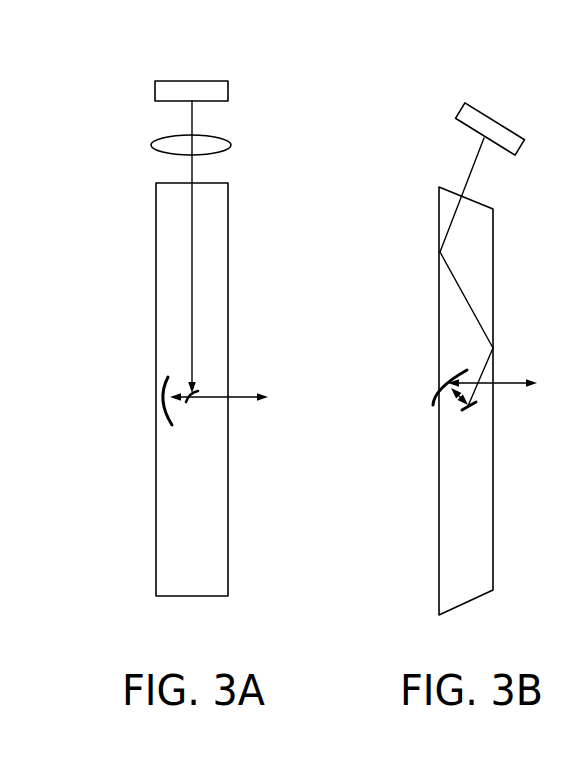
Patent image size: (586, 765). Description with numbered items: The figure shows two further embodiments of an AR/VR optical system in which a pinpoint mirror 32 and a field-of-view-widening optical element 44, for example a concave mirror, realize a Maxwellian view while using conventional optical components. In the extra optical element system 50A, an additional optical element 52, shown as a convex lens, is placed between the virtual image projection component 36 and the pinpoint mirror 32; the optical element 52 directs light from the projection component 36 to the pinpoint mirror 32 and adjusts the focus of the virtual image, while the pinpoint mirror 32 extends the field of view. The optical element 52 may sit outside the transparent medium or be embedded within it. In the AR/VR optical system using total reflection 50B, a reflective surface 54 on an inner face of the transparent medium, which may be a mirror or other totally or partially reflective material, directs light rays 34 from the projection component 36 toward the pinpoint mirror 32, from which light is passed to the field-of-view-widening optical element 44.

In FIG. 3A, the virtual image projection component 36 is at (236, 57).
In FIG. 3B, the virtual image projection component 36 is at (498, 88).
In FIG. 3A, the additional optical element 52 is at (242, 124).
In FIG. 3A, the extra optical element system 50A is at (151, 389).
In FIG. 3B, the AR/VR optical system using total reflection 50B is at (424, 401).
In FIG. 3A, the field-of-view-widening optical element 44 is at (123, 374).
In FIG. 3B, the field-of-view-widening optical element 44 is at (408, 362).
In FIG. 3A, the pinpoint mirror 32 is at (247, 366).
In FIG. 3B, the pinpoint mirror 32 is at (518, 445).
In FIG. 3B, the reflective surface 54 is at (492, 285).
In FIG. 3B, the light rays 34 is at (522, 336).